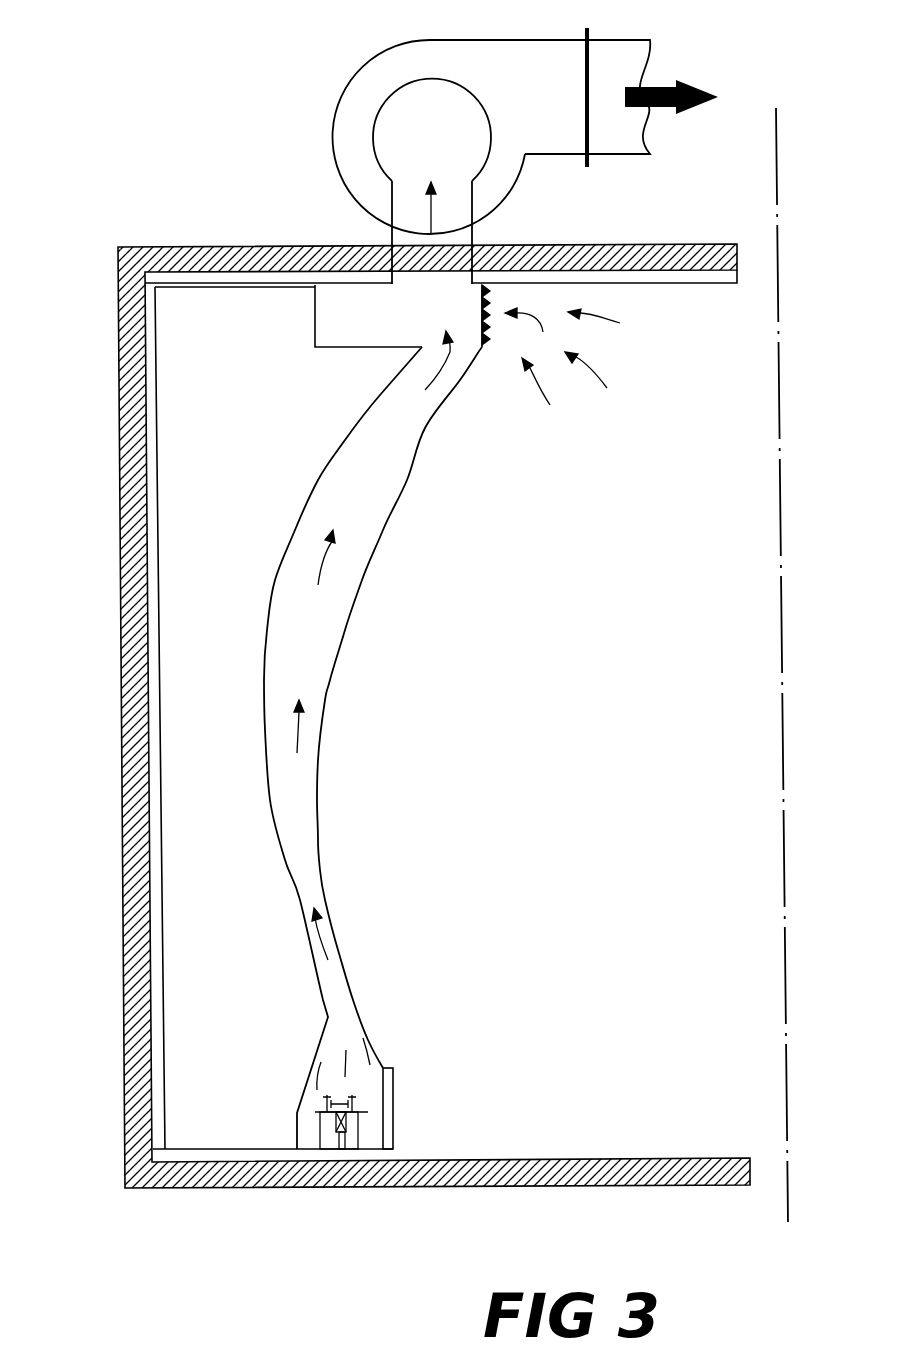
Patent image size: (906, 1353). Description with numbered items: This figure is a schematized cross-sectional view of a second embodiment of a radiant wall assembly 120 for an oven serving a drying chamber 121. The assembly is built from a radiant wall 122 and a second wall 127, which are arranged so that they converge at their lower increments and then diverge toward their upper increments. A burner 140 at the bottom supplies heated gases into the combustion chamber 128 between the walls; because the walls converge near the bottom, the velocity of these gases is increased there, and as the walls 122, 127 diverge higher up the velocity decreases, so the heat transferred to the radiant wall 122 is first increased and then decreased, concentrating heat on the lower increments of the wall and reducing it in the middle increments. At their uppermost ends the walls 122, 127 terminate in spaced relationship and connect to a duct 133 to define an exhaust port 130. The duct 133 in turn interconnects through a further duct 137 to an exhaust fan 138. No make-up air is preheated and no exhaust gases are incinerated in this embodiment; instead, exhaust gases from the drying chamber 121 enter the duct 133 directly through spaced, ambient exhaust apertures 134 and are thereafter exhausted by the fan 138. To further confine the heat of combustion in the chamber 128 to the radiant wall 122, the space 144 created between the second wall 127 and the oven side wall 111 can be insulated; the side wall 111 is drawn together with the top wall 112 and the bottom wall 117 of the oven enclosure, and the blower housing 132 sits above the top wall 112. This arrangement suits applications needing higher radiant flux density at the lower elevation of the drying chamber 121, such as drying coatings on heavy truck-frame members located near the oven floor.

The oven side wall 111 is at (122, 870).
The housing top wall 112 is at (245, 246).
The housing bottom wall 117 is at (255, 1178).
The radiant wall assembly 120 is at (297, 458).
The drying chamber 121 is at (752, 604).
The radiant wall 122 is at (338, 638).
The second wall 127 is at (265, 667).
The combustion chamber 128 is at (340, 997).
The exhaust port 130 is at (432, 350).
The blower 132 is at (339, 84).
The duct 133 is at (315, 317).
The ambient exhaust apertures 134 is at (487, 342).
The duct 137 is at (452, 258).
The exhaust fan 138 is at (470, 40).
The burner 140 is at (312, 1117).
The space 144 is at (173, 589).